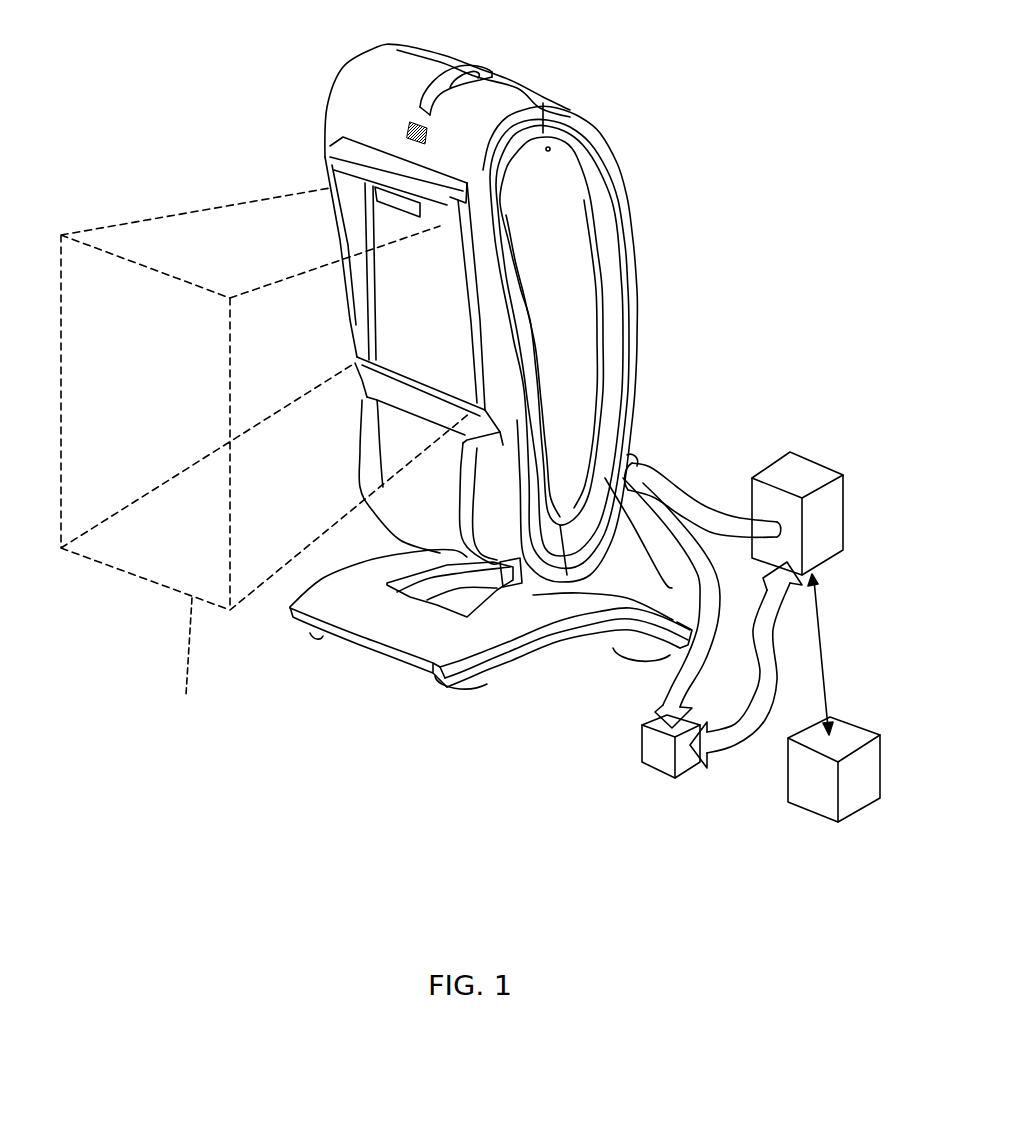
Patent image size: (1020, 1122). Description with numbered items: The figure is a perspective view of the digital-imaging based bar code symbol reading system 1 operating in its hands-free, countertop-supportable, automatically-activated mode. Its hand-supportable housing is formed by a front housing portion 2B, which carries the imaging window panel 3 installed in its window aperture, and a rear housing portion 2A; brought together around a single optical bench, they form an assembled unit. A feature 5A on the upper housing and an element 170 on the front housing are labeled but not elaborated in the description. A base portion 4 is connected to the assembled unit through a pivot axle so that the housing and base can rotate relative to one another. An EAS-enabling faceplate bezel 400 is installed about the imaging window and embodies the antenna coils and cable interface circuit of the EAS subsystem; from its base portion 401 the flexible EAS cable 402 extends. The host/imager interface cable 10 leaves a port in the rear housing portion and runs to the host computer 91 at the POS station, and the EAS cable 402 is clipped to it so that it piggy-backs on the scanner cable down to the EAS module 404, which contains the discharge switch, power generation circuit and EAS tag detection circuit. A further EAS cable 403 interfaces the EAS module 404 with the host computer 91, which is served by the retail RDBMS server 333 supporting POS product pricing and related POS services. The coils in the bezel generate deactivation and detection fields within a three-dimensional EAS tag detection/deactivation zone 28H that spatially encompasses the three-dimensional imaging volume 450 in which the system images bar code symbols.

The digital-imaging based bar code symbol reading system 1 is at (788, 230).
The rear housing portion 2A is at (633, 390).
The front housing portion 2B is at (357, 75).
The imaging window panel 3 is at (446, 327).
The base portion 4 is at (421, 670).
The recess in head portion 5A is at (477, 70).
The host/imager interface cable 10 is at (683, 493).
The speaker grille 170 is at (410, 128).
The EAS-enabling faceplate bezel 400 is at (488, 273).
The base portion of the EAS-enabling faceplate bezel structure 401 is at (393, 463).
The flexible EAS cable 402 is at (667, 688).
The EAS cable 403 is at (727, 752).
The EAS module 404 is at (643, 745).
The 3D imaging volume 450 is at (143, 218).
The EAS tag detection/deactivation zone 28H is at (185, 692).
The host computer 91 is at (805, 473).
The retail RDBMS server 333 is at (808, 825).